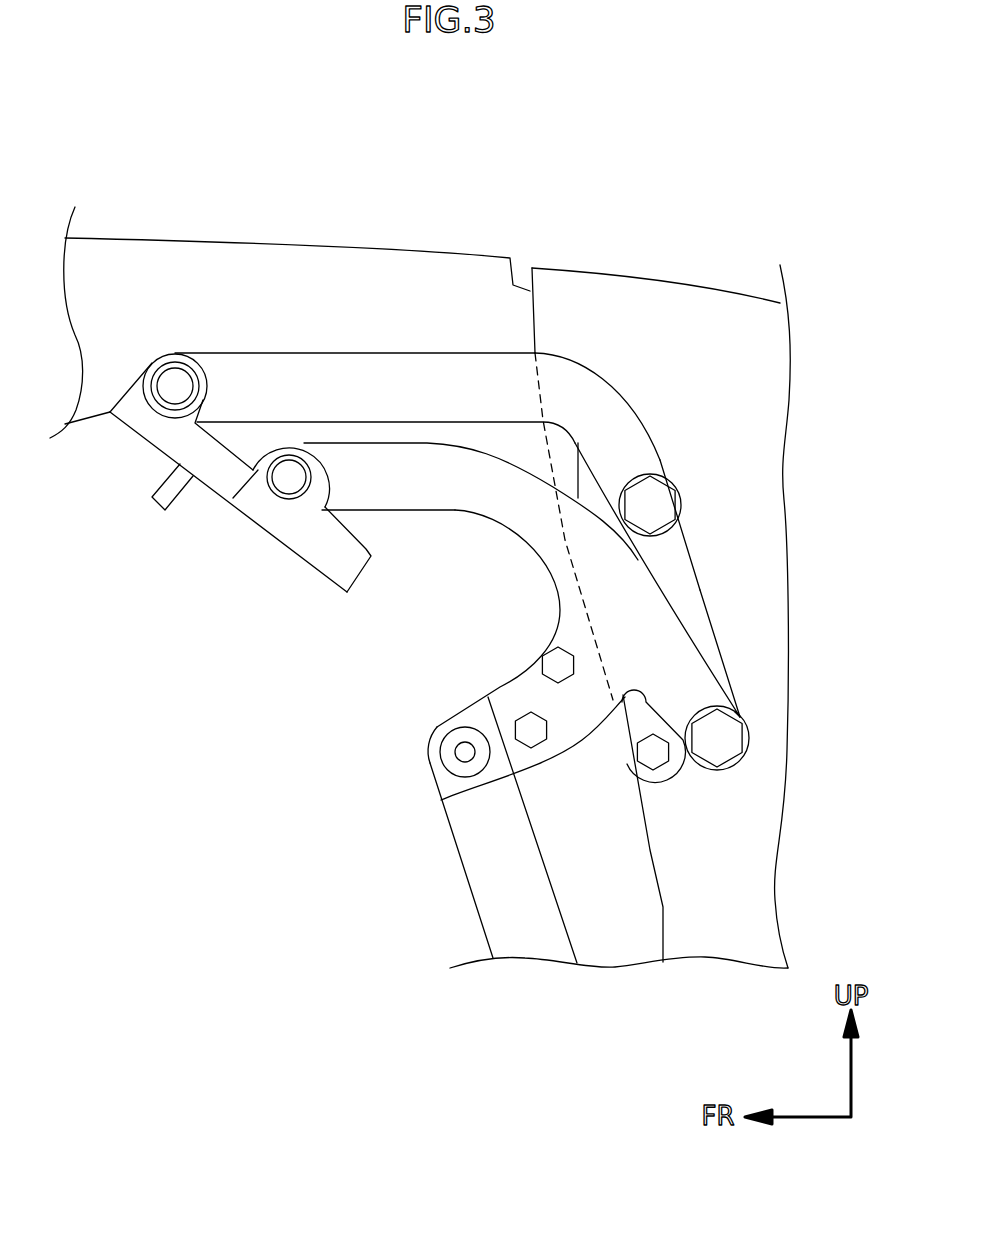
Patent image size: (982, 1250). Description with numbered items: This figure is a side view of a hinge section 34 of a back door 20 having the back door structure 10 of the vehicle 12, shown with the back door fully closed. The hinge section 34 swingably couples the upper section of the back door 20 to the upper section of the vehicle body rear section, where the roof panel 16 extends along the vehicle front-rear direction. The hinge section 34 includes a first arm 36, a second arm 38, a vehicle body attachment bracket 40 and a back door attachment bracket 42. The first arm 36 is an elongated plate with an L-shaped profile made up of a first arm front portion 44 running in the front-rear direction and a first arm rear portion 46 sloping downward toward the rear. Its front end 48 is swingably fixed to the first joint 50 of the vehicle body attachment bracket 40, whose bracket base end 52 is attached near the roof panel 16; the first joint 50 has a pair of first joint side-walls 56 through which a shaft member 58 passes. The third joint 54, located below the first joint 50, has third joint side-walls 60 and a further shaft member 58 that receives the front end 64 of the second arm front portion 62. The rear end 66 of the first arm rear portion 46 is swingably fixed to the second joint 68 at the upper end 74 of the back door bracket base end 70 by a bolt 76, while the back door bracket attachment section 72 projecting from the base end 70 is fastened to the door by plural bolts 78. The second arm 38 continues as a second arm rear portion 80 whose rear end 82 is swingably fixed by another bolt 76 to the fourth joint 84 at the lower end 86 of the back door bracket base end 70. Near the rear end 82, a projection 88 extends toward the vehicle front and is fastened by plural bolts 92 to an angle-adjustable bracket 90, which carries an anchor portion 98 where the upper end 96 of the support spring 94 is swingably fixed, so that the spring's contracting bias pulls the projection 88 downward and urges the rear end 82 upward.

The back door structure 10 is at (659, 554).
The vehicle 12 is at (290, 267).
The roof panel 16 is at (382, 258).
The back door 20 is at (777, 373).
The hinge section 34 is at (656, 492).
The first arm 36 is at (585, 360).
The second arm 38 is at (562, 488).
The vehicle body attachment bracket 40 is at (267, 478).
The back door attachment bracket 42 is at (676, 580).
The first arm front portion 44 is at (388, 375).
The first arm rear portion 46 is at (635, 435).
The front end 48 is at (207, 340).
The first joint 50 is at (158, 352).
The bracket base end 52 is at (348, 592).
The third joint 54 is at (341, 476).
The first joint side-walls 56 is at (206, 392).
The shaft member 58 is at (168, 393).
The third joint side-walls 60 is at (332, 475).
The second arm front portion 62 is at (471, 551).
The front end 64 is at (320, 512).
The rear end 66 is at (694, 479).
The second joint 68 is at (683, 495).
The back door bracket base end 70 is at (710, 630).
The back door bracket attachment section 72 is at (623, 826).
The upper end 74 is at (680, 530).
The bolt 76 is at (655, 518).
The bolts 78 is at (655, 760).
The second arm rear portion 80 is at (632, 617).
The rear end 82 is at (768, 709).
The fourth joint 84 is at (752, 745).
The lower end 86 is at (730, 690).
The projection 88 is at (558, 737).
The angle-adjustable bracket 90 is at (496, 789).
The bolts 92 is at (530, 722).
The support spring 94 is at (493, 908).
The upper end 96 is at (467, 803).
The anchor portion 98 is at (450, 740).